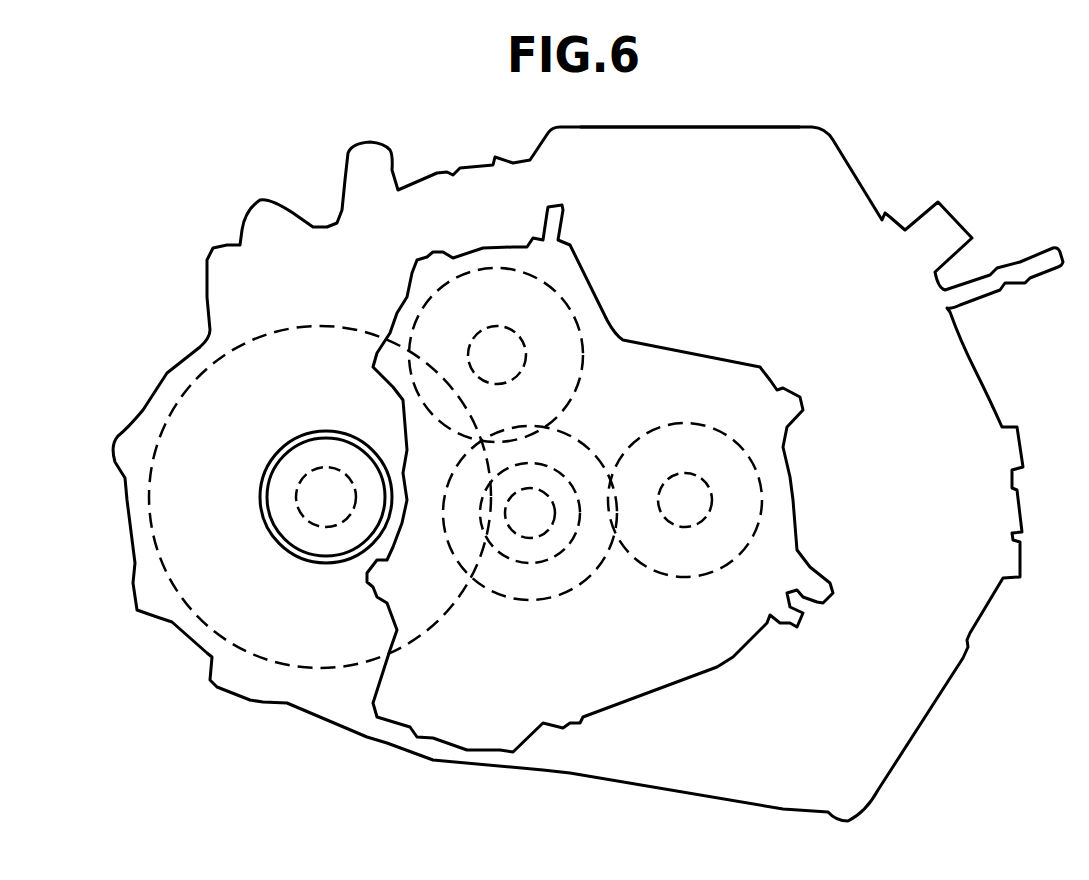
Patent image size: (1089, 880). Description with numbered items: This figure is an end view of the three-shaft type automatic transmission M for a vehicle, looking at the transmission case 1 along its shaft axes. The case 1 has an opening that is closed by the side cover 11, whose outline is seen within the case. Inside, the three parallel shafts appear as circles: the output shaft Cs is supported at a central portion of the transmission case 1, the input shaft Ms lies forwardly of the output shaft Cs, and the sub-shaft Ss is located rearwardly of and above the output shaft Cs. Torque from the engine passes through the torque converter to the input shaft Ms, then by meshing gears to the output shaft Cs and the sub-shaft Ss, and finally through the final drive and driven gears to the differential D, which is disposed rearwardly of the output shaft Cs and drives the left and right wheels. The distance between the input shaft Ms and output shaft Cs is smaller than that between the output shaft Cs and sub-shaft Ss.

The transmission case 1 is at (709, 135).
The automatic transmission M is at (861, 188).
The side cover 11 is at (693, 367).
The differential D is at (312, 470).
The sub-shaft Ss is at (523, 358).
The output shaft Cs is at (545, 535).
The input shaft Ms is at (680, 527).